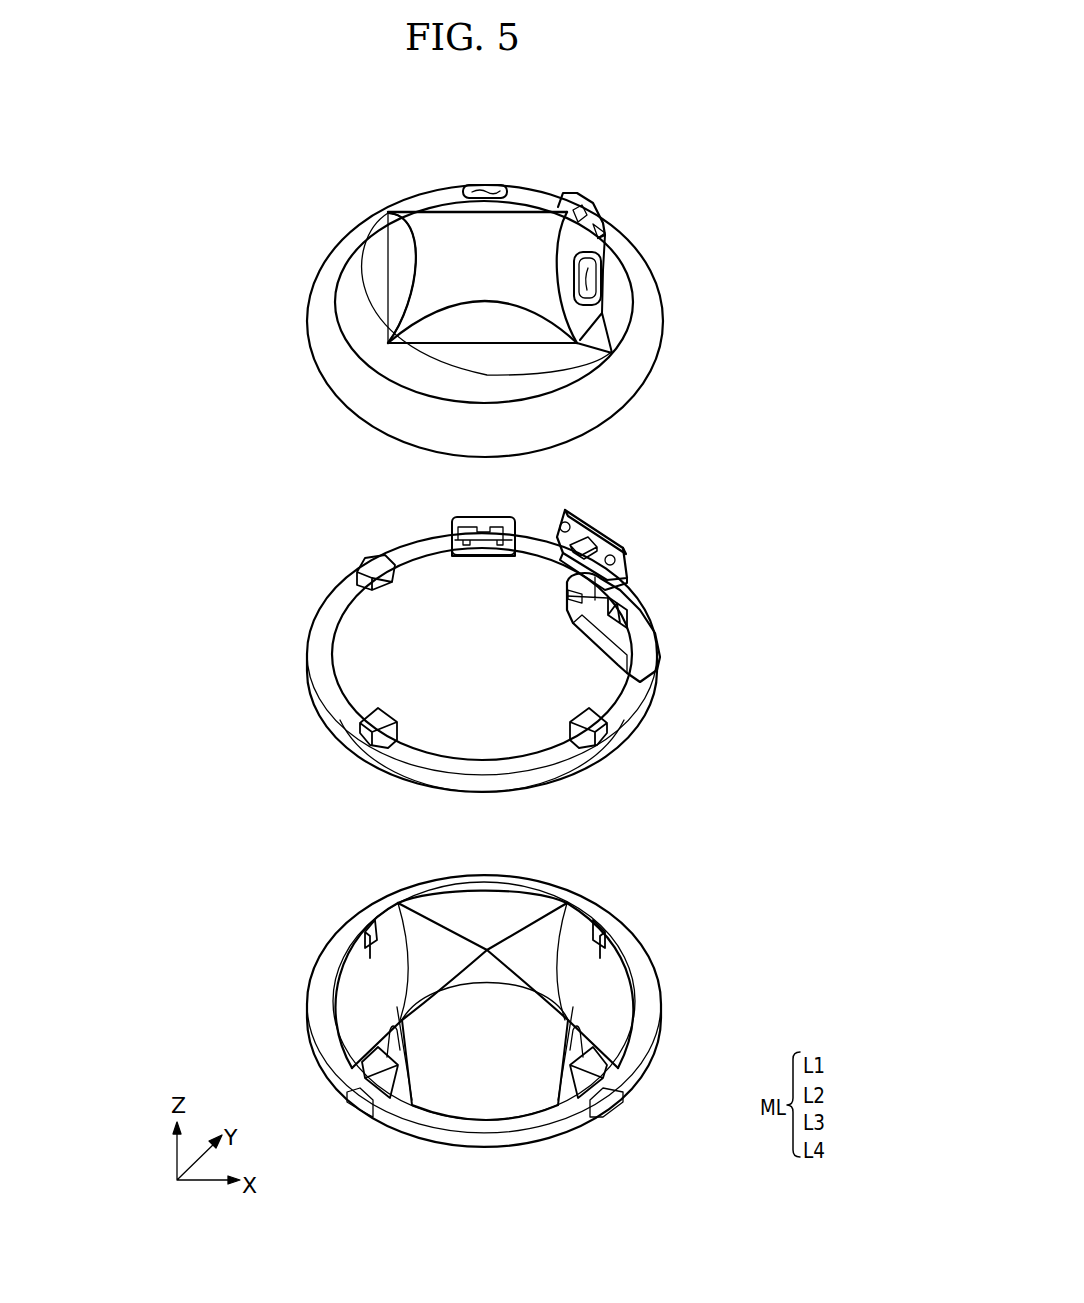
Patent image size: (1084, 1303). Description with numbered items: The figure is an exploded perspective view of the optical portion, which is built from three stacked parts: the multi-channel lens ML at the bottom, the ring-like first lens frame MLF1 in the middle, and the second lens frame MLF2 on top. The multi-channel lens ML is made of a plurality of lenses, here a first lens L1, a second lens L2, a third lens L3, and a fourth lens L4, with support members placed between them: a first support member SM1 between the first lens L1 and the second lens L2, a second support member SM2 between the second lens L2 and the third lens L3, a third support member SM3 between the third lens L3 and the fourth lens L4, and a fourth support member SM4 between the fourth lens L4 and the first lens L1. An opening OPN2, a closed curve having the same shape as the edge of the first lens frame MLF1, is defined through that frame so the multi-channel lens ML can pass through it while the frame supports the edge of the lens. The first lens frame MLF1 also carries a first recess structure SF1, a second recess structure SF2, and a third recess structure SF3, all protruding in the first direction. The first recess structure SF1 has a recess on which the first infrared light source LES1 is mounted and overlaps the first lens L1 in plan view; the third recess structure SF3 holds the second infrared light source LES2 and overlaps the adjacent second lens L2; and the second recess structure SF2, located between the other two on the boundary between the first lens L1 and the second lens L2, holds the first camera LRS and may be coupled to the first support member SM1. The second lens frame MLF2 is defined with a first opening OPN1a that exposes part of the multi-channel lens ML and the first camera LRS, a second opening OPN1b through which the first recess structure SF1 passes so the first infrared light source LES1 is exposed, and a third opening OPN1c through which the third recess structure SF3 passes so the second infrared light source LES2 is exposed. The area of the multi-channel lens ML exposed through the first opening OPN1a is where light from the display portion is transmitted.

The second lens frame MLF2 is at (320, 309).
The first opening OPN1a is at (458, 260).
The second opening OPN1b is at (588, 270).
The third opening OPN1c is at (479, 184).
The first lens frame MLF1 is at (556, 765).
The opening OPN2 is at (460, 702).
The second infrared light source LES2 is at (478, 528).
The third recess structure SF3 is at (506, 523).
The first camera LRS is at (594, 532).
The second recess structure SF2 is at (626, 563).
The first infrared light source LES1 is at (640, 602).
The first recess structure SF1 is at (655, 638).
The multi-channel lens ML is at (632, 1073).
The first lens L1 is at (612, 1027).
The second lens L2 is at (479, 895).
The third lens L3 is at (365, 977).
The fourth lens L4 is at (490, 1088).
The first support member SM1 is at (590, 920).
The second support member SM2 is at (378, 920).
The third support member SM3 is at (378, 1078).
The fourth support member SM4 is at (597, 1080).